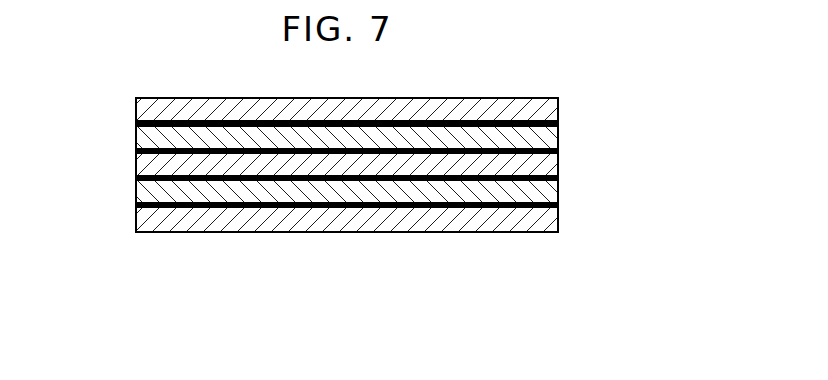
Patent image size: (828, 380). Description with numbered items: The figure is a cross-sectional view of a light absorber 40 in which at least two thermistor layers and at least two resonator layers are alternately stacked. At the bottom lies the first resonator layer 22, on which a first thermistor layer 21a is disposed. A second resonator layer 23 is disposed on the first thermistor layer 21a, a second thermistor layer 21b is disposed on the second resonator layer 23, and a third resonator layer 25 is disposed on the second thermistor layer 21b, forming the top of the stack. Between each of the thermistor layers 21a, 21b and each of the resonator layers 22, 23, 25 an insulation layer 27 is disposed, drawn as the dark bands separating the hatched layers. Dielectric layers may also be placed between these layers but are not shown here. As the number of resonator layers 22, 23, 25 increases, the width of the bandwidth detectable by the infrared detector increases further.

The third resonator layer 25 is at (550, 108).
The second thermistor layer 21b is at (543, 137).
The second resonator layer 23 is at (548, 167).
The first thermistor layer 21a is at (543, 192).
The first resonator layer 22 is at (548, 218).
The insulation layer 27 is at (136, 125).
The light absorber 40 is at (437, 247).